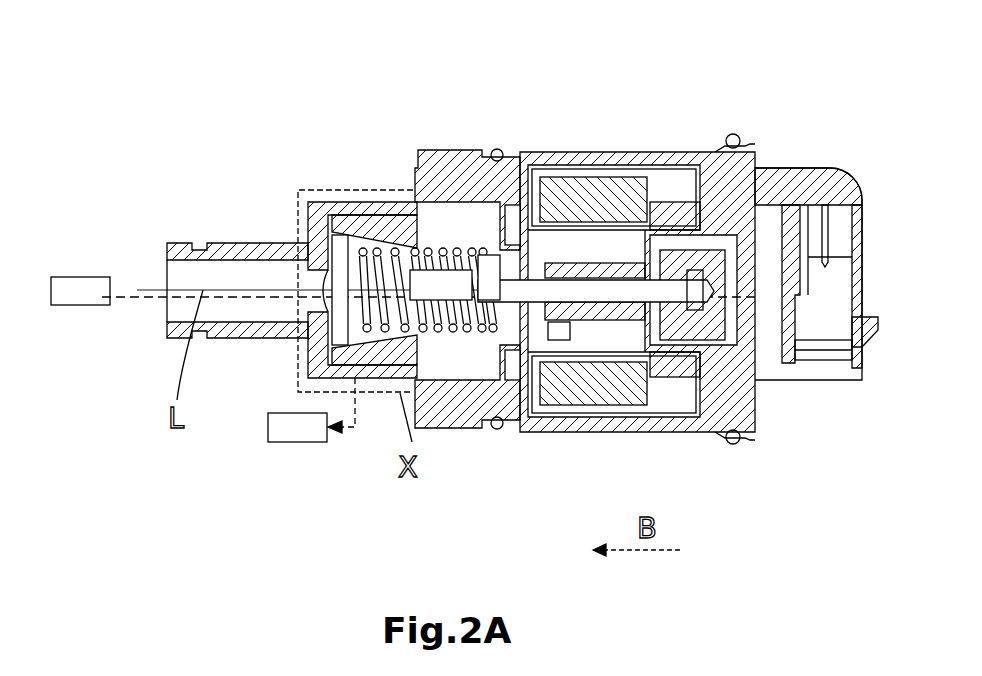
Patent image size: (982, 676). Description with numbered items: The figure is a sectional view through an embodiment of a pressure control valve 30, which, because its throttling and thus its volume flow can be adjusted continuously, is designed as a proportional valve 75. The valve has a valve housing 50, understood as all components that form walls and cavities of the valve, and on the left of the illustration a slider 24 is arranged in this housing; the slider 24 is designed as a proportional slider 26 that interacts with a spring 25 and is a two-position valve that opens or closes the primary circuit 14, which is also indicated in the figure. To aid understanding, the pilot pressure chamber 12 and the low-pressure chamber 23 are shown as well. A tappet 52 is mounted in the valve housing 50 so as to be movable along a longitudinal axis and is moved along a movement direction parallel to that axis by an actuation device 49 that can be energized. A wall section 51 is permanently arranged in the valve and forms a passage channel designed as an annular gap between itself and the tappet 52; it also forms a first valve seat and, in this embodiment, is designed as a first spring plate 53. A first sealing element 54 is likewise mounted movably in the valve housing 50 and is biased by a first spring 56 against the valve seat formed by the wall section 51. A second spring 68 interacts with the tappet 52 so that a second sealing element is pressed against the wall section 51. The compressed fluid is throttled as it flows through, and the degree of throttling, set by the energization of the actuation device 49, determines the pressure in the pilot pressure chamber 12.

The pilot pressure chamber 12 is at (85, 283).
The primary circuit 14 is at (350, 430).
The low-pressure chamber 23 is at (297, 428).
The slider 24 is at (337, 236).
The proportional slider 26 is at (328, 172).
The spring 25 is at (390, 237).
The pressure control valve 30 is at (224, 185).
The proportional valve 75 is at (227, 130).
The actuation device 49 is at (575, 120).
The valve housing 50 is at (360, 210).
The wall section 51 is at (538, 231).
The first spring plate 53 is at (519, 205).
The tappet 52 is at (608, 282).
The first sealing element 54 is at (450, 227).
The first spring 56 is at (470, 245).
The second spring 68 is at (565, 340).